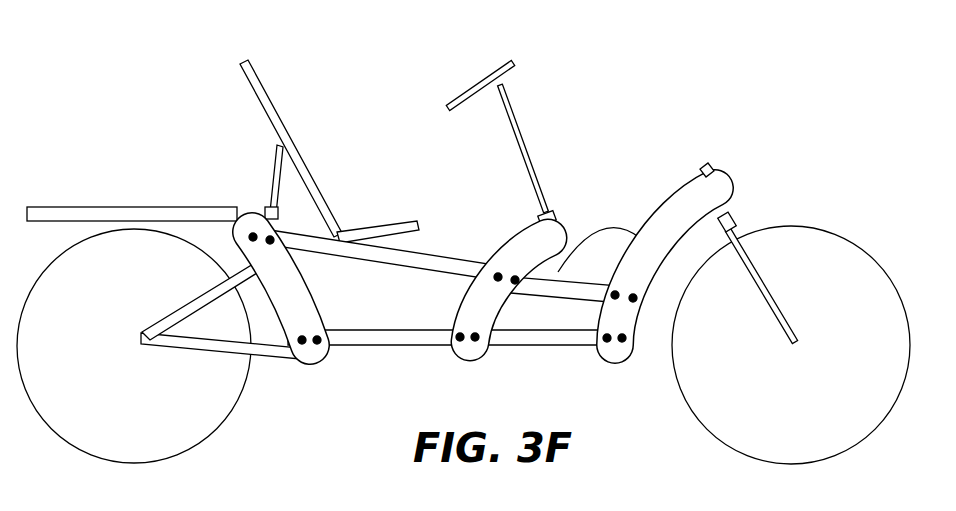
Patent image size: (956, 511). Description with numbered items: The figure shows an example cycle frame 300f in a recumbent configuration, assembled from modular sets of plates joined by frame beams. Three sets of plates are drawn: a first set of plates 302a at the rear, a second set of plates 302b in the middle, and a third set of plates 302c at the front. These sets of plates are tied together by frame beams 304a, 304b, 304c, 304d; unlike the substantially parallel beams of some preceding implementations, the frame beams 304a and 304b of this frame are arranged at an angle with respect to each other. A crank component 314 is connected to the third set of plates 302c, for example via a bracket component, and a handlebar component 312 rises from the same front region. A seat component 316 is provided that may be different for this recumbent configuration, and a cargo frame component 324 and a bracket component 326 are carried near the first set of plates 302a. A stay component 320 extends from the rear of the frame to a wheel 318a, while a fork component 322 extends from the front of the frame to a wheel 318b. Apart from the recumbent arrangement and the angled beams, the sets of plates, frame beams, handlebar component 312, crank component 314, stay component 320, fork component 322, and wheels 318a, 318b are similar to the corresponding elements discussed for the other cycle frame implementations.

The cycle frame 300f is at (785, 127).
The first set of plates 302a is at (309, 363).
The second set of plates 302b is at (497, 253).
The third set of plates 302c is at (620, 363).
The frame beam 304a is at (376, 347).
The frame beam 304b is at (378, 267).
The frame beam 304c is at (543, 346).
The frame beam 304d is at (540, 297).
The handlebar component 312 is at (516, 122).
The crank component 314 is at (623, 235).
The seat component 316 is at (298, 147).
The wheel 318a is at (153, 423).
The wheel 318b is at (853, 243).
The stay component 320 is at (140, 345).
The fork component 322 is at (773, 315).
The cargo frame component 324 is at (122, 205).
The bracket component 326 is at (243, 207).